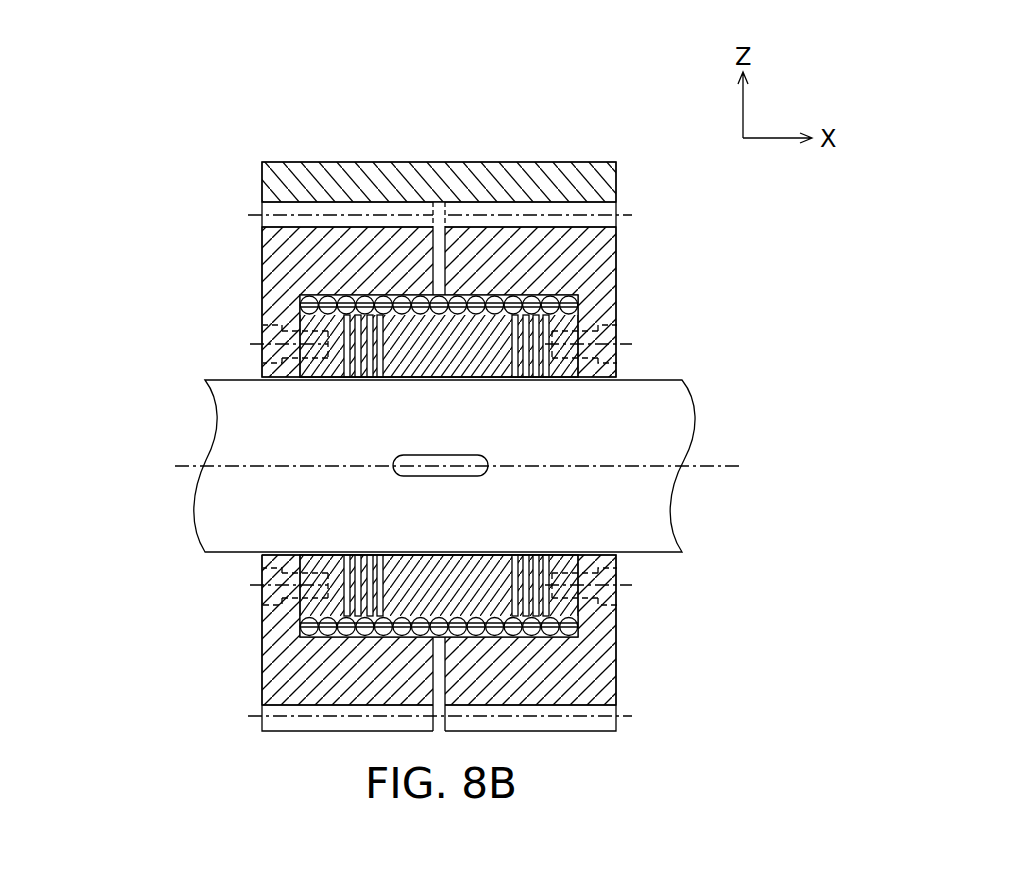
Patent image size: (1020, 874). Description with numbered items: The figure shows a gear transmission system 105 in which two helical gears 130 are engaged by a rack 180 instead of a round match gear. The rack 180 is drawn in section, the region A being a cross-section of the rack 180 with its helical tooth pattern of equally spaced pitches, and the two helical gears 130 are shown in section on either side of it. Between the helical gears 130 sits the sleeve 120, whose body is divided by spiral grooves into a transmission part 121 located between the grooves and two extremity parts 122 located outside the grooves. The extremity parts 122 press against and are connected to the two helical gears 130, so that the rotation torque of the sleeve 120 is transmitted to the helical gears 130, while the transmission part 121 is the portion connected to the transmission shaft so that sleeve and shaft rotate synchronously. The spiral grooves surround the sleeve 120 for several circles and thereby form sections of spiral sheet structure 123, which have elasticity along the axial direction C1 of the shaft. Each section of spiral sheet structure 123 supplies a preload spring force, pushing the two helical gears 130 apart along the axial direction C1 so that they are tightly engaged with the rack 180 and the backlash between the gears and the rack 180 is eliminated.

The gear transmission system 105 is at (83, 102).
The rack 180 is at (277, 130).
The sleeve 120 is at (731, 172).
The transmission part 121 is at (471, 375).
The extremity parts 122 is at (276, 336).
The spiral sheet structures 123 is at (530, 593).
The helical gears 130 is at (277, 281).
The region A is at (278, 184).
The axial direction C1 is at (478, 467).